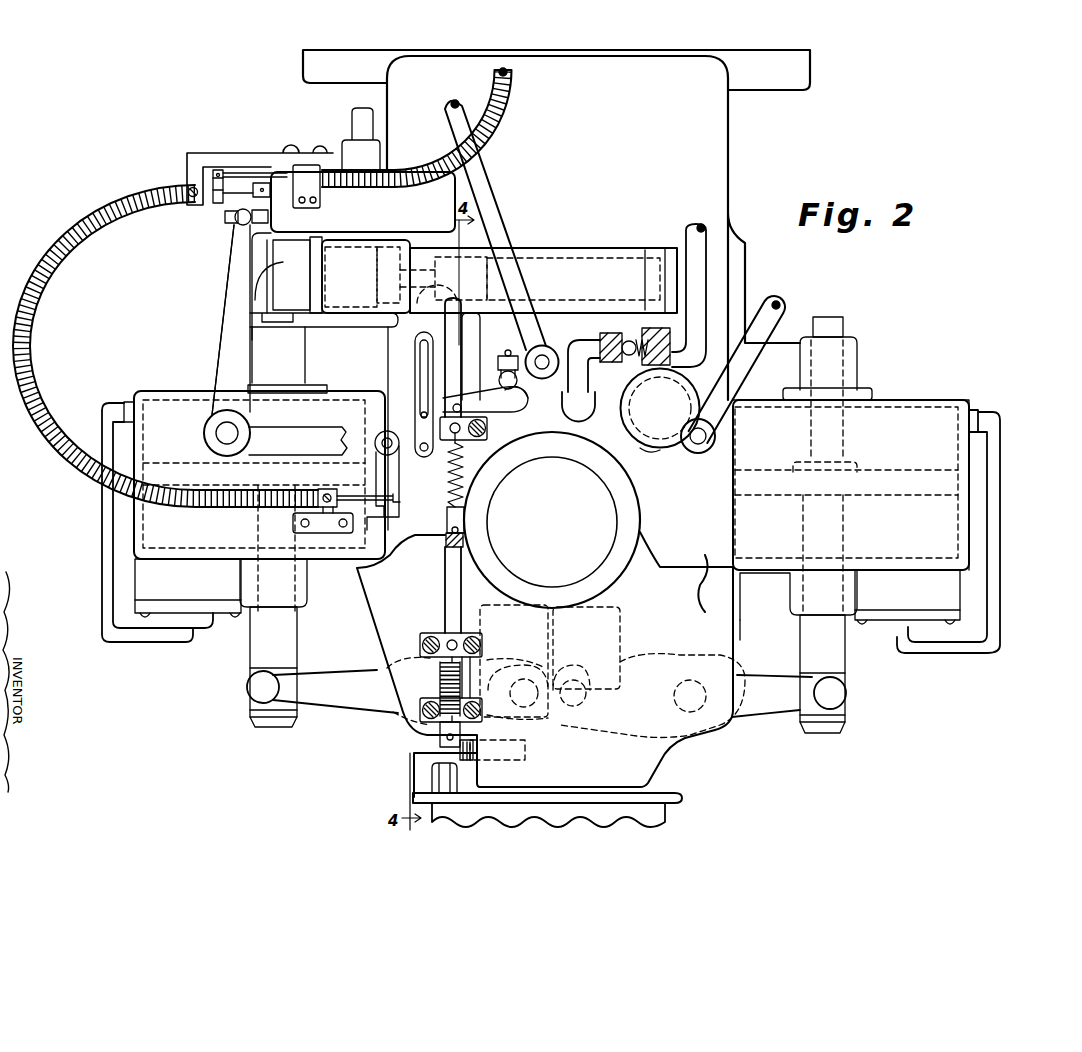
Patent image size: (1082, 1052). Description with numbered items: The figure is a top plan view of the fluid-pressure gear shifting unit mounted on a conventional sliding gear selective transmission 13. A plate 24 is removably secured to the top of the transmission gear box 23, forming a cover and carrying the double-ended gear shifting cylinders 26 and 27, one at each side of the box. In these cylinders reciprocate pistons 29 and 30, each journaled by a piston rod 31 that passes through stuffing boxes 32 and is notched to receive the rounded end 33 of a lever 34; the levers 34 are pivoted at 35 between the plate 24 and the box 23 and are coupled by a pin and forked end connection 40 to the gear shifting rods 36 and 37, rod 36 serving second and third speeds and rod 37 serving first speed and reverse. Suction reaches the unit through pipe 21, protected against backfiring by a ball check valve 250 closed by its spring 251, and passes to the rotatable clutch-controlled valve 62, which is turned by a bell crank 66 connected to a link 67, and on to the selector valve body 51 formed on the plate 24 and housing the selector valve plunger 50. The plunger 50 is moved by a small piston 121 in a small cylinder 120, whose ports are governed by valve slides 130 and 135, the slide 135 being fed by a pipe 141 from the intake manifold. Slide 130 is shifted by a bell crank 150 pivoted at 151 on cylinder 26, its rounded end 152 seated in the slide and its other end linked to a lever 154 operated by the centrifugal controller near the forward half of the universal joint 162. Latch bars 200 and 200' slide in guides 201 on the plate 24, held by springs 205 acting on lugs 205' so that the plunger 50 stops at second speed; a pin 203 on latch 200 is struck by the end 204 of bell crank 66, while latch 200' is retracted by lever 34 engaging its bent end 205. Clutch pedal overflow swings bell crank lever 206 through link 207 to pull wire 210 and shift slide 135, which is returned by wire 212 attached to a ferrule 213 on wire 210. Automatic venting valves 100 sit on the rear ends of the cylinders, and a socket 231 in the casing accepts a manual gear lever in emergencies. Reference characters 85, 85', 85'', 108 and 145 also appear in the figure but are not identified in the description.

The sliding gear selective transmission 13 is at (730, 127).
The pipe 21 is at (693, 240).
The transmission gear box 23 is at (737, 630).
The plate 24 is at (703, 610).
The double-ended cylinder 26 is at (130, 522).
The double-ended cylinder 27 is at (969, 530).
The piston 29 is at (165, 463).
The piston 30 is at (930, 470).
The piston rod 31 is at (297, 620).
The stuffing boxes 32 is at (858, 367).
The rounded end 33 is at (262, 687).
The lever 34 is at (328, 700).
The pivot 35 is at (675, 684).
The gear shifting rod 36 is at (478, 612).
The gear shifting rod 37 is at (622, 612).
The pin and forked end connection 40 is at (522, 683).
The selector valve plunger 50 is at (613, 267).
The selector valve body 51 is at (647, 245).
The clutch-controlled valve 62 is at (506, 368).
The bell crank 66 is at (525, 390).
The link 67 is at (500, 238).
The cam 85 is at (652, 462).
The lever 85' is at (737, 369).
The pivot 85'' is at (700, 449).
The automatic venting valves 100 is at (150, 582).
The bracket 108 is at (103, 562).
The small cylinder 120 is at (338, 255).
The small piston 121 is at (372, 252).
The valve slide 130 is at (225, 217).
The valve slide 135 is at (267, 186).
The pipe 141 is at (353, 124).
The motor 145 is at (283, 260).
The bell crank 150 is at (228, 342).
The pivot 151 is at (224, 434).
The rounded end 152 is at (238, 225).
The lever 154 is at (443, 777).
The forward half of the universal joint 162 is at (665, 816).
The latch bar 200 is at (419, 428).
The latch bar 200' is at (430, 459).
The guides 201 is at (490, 433).
The pin 203 is at (492, 415).
The end of bell crank 204 is at (452, 383).
The springs 205 is at (473, 609).
The lugs 205' is at (486, 633).
The bell crank lever 206 is at (386, 465).
The link 207 is at (418, 393).
The wire 210 is at (97, 203).
The wire 212 is at (247, 172).
The ferrule 213 is at (222, 168).
The socket 231 is at (621, 538).
The ball check valve 250 is at (624, 335).
The spring 251 is at (660, 408).